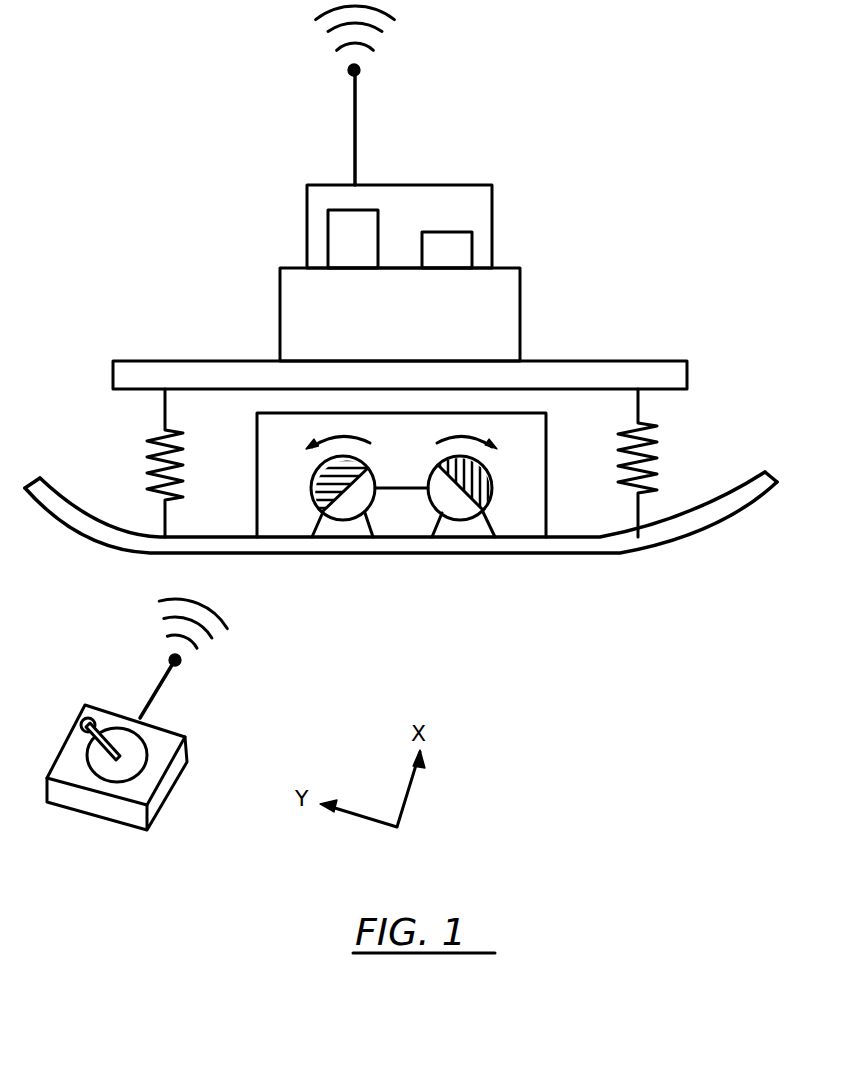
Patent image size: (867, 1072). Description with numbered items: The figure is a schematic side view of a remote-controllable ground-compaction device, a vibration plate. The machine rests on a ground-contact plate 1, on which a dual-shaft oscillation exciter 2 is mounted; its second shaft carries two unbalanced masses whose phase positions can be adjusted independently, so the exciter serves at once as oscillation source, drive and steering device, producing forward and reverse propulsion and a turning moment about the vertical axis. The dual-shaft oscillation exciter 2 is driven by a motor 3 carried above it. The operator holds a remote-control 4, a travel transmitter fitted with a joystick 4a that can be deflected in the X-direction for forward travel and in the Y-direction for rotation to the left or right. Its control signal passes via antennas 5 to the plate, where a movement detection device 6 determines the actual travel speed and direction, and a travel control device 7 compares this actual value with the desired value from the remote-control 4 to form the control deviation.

The ground-contact plate 1 is at (515, 540).
The dual-shaft oscillation exciter 2 is at (397, 525).
The motor 3 is at (492, 307).
The remote-control 4 is at (158, 757).
The joystick 4a is at (108, 718).
The antennas 5 is at (355, 112).
The movement detection device 6 is at (458, 247).
The travel control device 7 is at (340, 237).